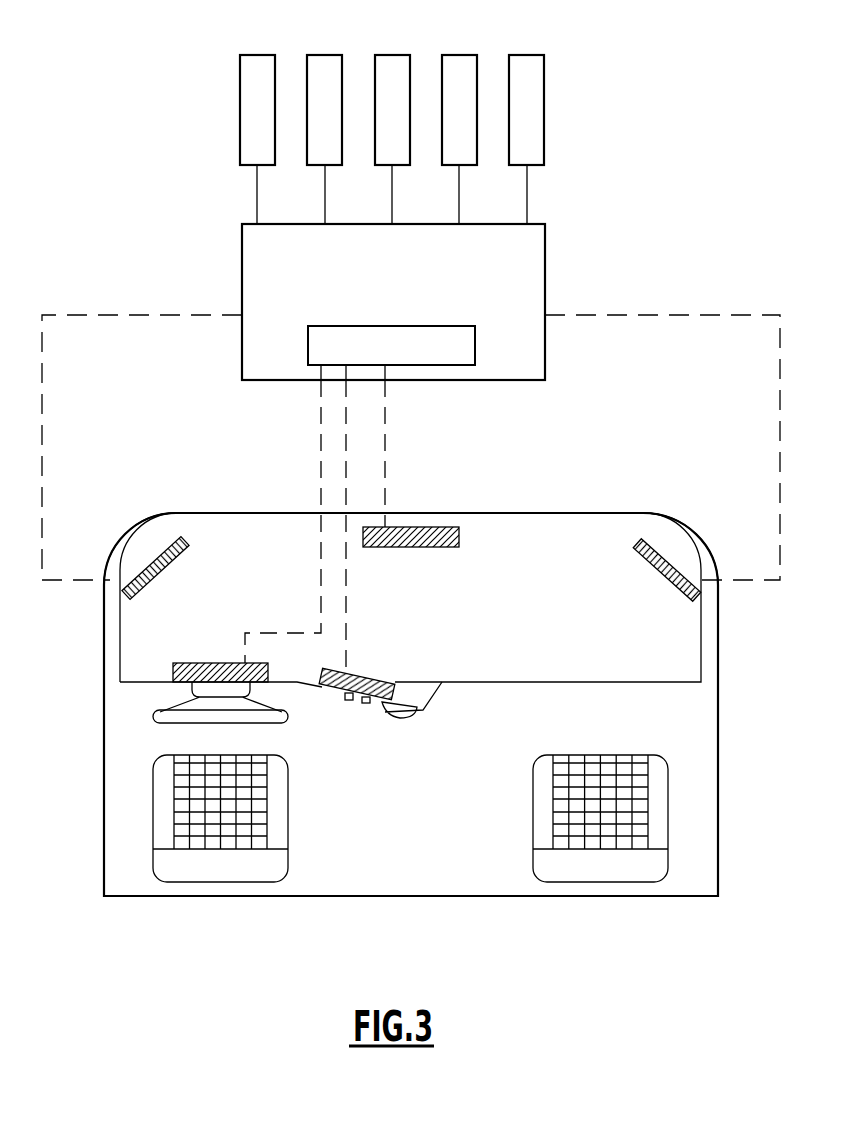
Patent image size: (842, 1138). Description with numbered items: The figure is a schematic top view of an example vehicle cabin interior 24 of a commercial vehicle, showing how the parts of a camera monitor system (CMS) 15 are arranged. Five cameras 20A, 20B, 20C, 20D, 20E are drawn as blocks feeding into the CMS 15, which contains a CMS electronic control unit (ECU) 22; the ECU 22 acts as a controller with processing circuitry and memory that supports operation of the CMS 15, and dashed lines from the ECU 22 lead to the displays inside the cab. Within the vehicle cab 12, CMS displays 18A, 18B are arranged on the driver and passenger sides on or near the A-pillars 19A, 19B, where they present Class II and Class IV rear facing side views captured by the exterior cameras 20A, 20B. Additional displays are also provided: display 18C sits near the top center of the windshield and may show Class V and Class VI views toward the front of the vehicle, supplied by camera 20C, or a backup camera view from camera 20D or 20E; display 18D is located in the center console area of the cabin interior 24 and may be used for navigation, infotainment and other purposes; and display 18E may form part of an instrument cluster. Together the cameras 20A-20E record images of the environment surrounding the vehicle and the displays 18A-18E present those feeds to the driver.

The vehicle cab 12 is at (526, 488).
The camera monitor system (CMS) 15 is at (545, 287).
The CMS display 18A is at (150, 546).
The CMS display 18B is at (671, 550).
The display 18C is at (416, 527).
The display 18D is at (372, 678).
The display 18E is at (213, 663).
The A-pillar 19A is at (120, 550).
The A-pillar 19B is at (700, 552).
The camera 20A is at (263, 55).
The camera 20B is at (330, 55).
The camera 20C is at (398, 55).
The camera 20D is at (465, 55).
The camera 20E is at (532, 55).
The CMS electronic control unit (ECU) 22 is at (308, 348).
The vehicle cabin interior 24 is at (398, 837).